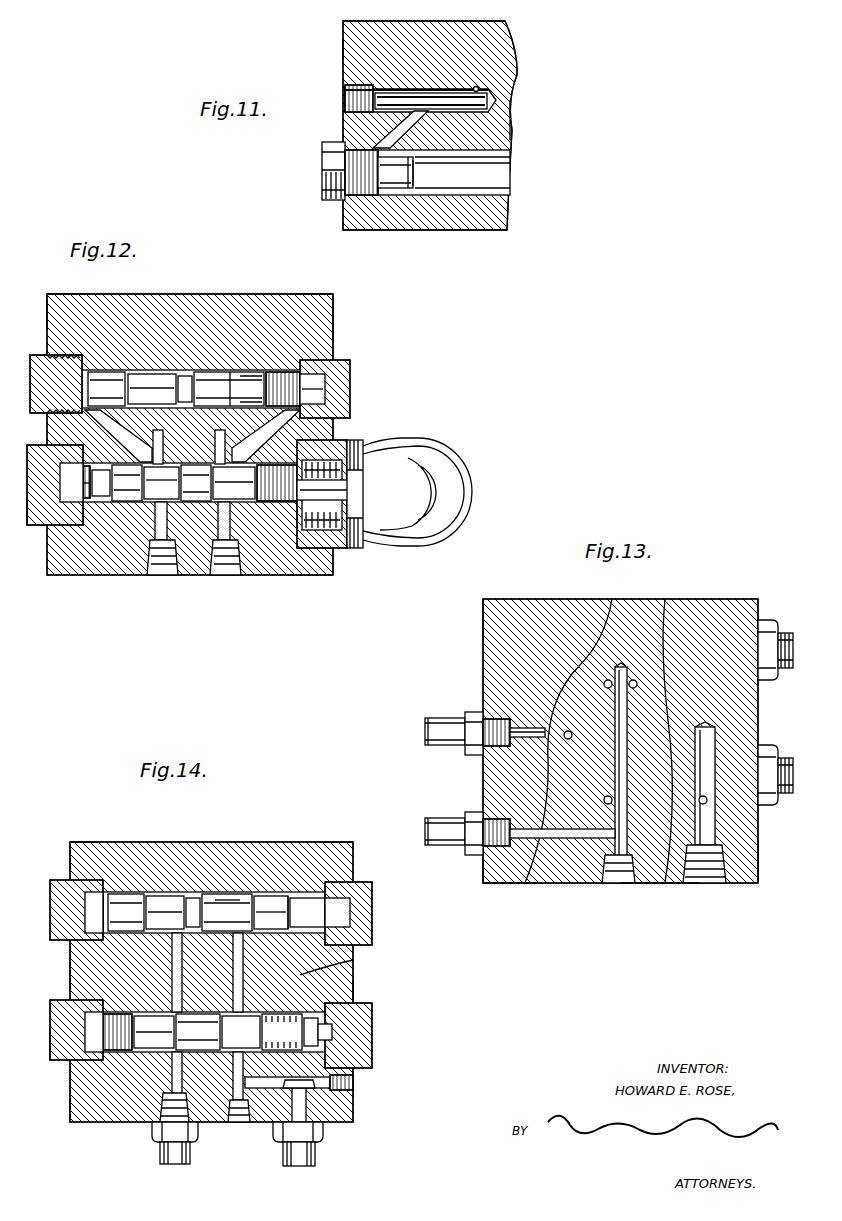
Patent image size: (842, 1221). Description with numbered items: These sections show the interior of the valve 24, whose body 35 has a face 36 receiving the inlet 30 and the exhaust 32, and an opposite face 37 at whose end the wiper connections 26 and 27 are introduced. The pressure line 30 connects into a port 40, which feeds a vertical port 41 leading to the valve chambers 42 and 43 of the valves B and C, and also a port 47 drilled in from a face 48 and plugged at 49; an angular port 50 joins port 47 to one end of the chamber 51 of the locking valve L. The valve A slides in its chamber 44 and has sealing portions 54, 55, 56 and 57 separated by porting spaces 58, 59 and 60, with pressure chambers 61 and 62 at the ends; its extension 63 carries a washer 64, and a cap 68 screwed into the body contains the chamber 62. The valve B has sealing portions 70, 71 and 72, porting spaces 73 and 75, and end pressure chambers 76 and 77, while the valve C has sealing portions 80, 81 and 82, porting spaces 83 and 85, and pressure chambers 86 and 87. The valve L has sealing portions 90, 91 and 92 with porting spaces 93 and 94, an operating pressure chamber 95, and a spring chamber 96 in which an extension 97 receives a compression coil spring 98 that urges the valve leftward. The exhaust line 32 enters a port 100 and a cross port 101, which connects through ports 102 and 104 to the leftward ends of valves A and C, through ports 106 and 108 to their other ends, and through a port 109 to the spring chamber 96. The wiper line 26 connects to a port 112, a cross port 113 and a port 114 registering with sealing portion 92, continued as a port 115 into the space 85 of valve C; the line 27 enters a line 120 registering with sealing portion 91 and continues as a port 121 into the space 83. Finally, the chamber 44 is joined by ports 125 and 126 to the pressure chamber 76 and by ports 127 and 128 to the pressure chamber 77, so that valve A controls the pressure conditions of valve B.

In FIG. 11, the valve assembly 24 is at (537, 127).
In FIG. 12, the valve assembly 24 is at (368, 331).
In FIG. 13, the valve assembly 24 is at (667, 905).
In FIG. 14, the valve assembly 24 is at (403, 996).
In FIG. 13, the wiper connection 26 is at (784, 633).
In FIG. 14, the wiper connection 26 is at (315, 1160).
In FIG. 13, the wiper connection 27 is at (784, 805).
In FIG. 14, the wiper connection 27 is at (160, 1160).
In FIG. 13, the inlet 30 is at (425, 733).
In FIG. 13, the exhaust 32 is at (448, 850).
In FIG. 11, the body 35 is at (495, 48).
In FIG. 12, the body 35 is at (300, 310).
In FIG. 13, the body 35 is at (500, 865).
In FIG. 14, the body 35 is at (335, 855).
In FIG. 12, the face 36 is at (60, 294).
In FIG. 13, the face 36 is at (483, 639).
In FIG. 14, the face 36 is at (88, 842).
In FIG. 12, the opposite face 37 is at (320, 578).
In FIG. 13, the opposite face 37 is at (758, 880).
In FIG. 14, the opposite face 37 is at (85, 1124).
In FIG. 11, the port 40 is at (478, 87).
In FIG. 13, the port 40 is at (540, 738).
In FIG. 12, the vertical port 41 is at (205, 372).
In FIG. 13, the vertical port 41 is at (560, 760).
In FIG. 12, the valve chamber 42 is at (299, 372).
In FIG. 14, the valve chamber 43 is at (305, 898).
In FIG. 12, the valve chamber 44 is at (128, 500).
In FIG. 11, the port 47 is at (481, 104).
In FIG. 13, the port 47 is at (708, 742).
In FIG. 11, the face 48 is at (343, 52).
In FIG. 12, the face 48 is at (48, 318).
In FIG. 13, the face 48 is at (520, 883).
In FIG. 14, the face 48 is at (70, 853).
In FIG. 11, the plug 49 is at (344, 93).
In FIG. 13, the plug 49 is at (692, 884).
In FIG. 11, the angular port 50 is at (392, 128).
In FIG. 13, the angular port 50 is at (707, 798).
In FIG. 11, the valve chamber 51 is at (490, 183).
In FIG. 14, the valve chamber 51 is at (340, 992).
In FIG. 12, the sealing portion 54 is at (80, 500).
In FIG. 12, the sealing portion 55 is at (155, 500).
In FIG. 12, the sealing portion 56 is at (196, 500).
In FIG. 12, the sealing portion 57 is at (278, 500).
In FIG. 12, the porting space 58 is at (128, 500).
In FIG. 12, the porting space 59 is at (190, 500).
In FIG. 12, the porting space 60 is at (228, 500).
In FIG. 12, the pressure chamber 61 is at (35, 508).
In FIG. 12, the pressure chamber 62 is at (335, 468).
In FIG. 12, the extension 63 is at (345, 485).
In FIG. 12, the washer 64 is at (340, 505).
In FIG. 12, the cap 68 is at (440, 470).
In FIG. 12, the sealing portion 70 is at (105, 372).
In FIG. 12, the sealing portion 71 is at (185, 372).
In FIG. 12, the sealing portion 72 is at (275, 372).
In FIG. 12, the porting space 73 is at (150, 374).
In FIG. 12, the porting space 75 is at (230, 372).
In FIG. 12, the pressure chamber 76 is at (35, 378).
In FIG. 12, the pressure chamber 77 is at (350, 380).
In FIG. 14, the sealing portion 80 is at (125, 894).
In FIG. 14, the sealing portion 81 is at (195, 896).
In FIG. 14, the sealing portion 82 is at (268, 896).
In FIG. 14, the porting space 83 is at (165, 896).
In FIG. 14, the porting space 85 is at (235, 894).
In FIG. 14, the pressure chamber 86 is at (55, 908).
In FIG. 14, the pressure chamber 87 is at (350, 913).
In FIG. 11, the sealing portion 90 is at (410, 178).
In FIG. 14, the sealing portion 90 is at (92, 1032).
In FIG. 14, the sealing portion 91 is at (170, 1085).
In FIG. 14, the sealing portion 92 is at (197, 1032).
In FIG. 14, the porting space 93 is at (80, 985).
In FIG. 14, the porting space 94 is at (220, 960).
In FIG. 11, the pressure chamber 95 is at (378, 196).
In FIG. 14, the pressure chamber 95 is at (60, 1045).
In FIG. 14, the spring chamber 96 is at (302, 1025).
In FIG. 14, the extension 97 is at (318, 1035).
In FIG. 14, the compression coil spring 98 is at (335, 1045).
In FIG. 13, the port 100 is at (568, 838).
In FIG. 13, the cross port 101 is at (612, 862).
In FIG. 12, the port 102 is at (68, 484).
In FIG. 13, the port 104 is at (604, 800).
In FIG. 12, the port 106 is at (235, 500).
In FIG. 13, the port 108 is at (604, 684).
In FIG. 13, the port 109 is at (636, 682).
In FIG. 14, the port 112 is at (320, 1100).
In FIG. 14, the cross port 113 is at (258, 1115).
In FIG. 14, the port 114 is at (233, 1095).
In FIG. 14, the port 115 is at (243, 977).
In FIG. 14, the line 120 is at (172, 1070).
In FIG. 14, the port 121 is at (172, 970).
In FIG. 12, the port 125 is at (40, 447).
In FIG. 12, the port 126 is at (110, 425).
In FIG. 12, the port 127 is at (295, 430).
In FIG. 12, the port 128 is at (325, 389).
In FIG. 12, the valve A is at (100, 498).
In FIG. 12, the valve B is at (140, 372).
In FIG. 14, the valve C is at (272, 905).
In FIG. 11, the locking valve L is at (396, 176).
In FIG. 14, the locking valve L is at (110, 1040).